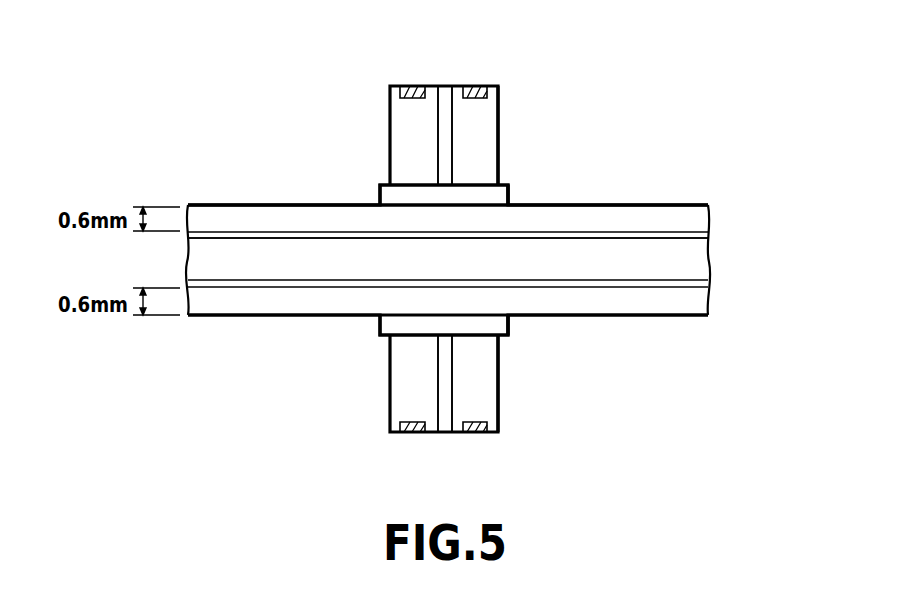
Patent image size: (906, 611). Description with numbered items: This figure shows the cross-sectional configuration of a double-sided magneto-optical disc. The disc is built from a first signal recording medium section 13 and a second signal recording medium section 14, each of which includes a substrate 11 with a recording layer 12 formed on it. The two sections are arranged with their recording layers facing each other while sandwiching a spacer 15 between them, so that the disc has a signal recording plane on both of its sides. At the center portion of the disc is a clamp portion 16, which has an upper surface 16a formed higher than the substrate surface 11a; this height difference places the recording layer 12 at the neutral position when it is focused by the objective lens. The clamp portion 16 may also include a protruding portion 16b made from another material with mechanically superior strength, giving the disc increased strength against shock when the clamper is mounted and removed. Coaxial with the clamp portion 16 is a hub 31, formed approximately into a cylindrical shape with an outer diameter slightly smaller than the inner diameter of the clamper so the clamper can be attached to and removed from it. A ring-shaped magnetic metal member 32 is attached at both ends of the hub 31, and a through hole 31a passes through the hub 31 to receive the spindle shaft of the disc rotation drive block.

The substrate 11 is at (697, 215).
The substrate surface 11a is at (623, 205).
The recording layer 12 is at (697, 233).
The first signal recording medium section 13 is at (775, 277).
The second signal recording medium section 14 is at (770, 170).
The spacer 15 is at (697, 257).
The clamp portion 16 is at (388, 184).
The upper surface 16a is at (508, 183).
The protruding portion 16b is at (508, 190).
The hub 31 is at (498, 120).
The through hole 31a is at (444, 100).
The magnetic metal member 32 is at (481, 88).